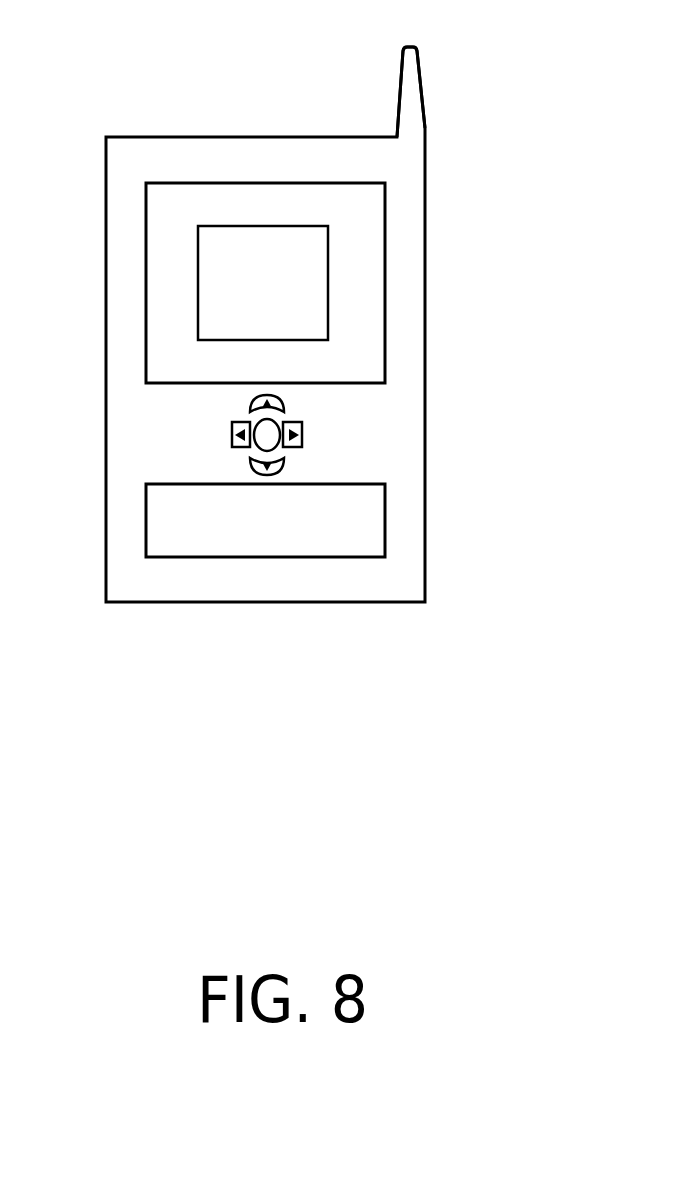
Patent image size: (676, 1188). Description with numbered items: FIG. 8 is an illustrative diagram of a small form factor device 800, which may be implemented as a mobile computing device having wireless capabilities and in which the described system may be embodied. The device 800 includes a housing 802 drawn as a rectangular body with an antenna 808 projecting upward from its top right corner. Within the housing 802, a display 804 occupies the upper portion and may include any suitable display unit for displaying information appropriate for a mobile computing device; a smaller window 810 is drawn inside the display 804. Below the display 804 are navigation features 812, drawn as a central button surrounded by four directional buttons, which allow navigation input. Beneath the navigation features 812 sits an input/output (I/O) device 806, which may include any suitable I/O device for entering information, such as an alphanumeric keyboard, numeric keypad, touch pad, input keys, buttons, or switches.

The small form factor device 800 is at (120, 69).
The housing 802 is at (426, 370).
The display 804 is at (385, 205).
The input/output (I/O) device 806 is at (388, 515).
The antenna 808 is at (399, 91).
The screen window 810 is at (333, 298).
The navigation features 812 is at (304, 435).